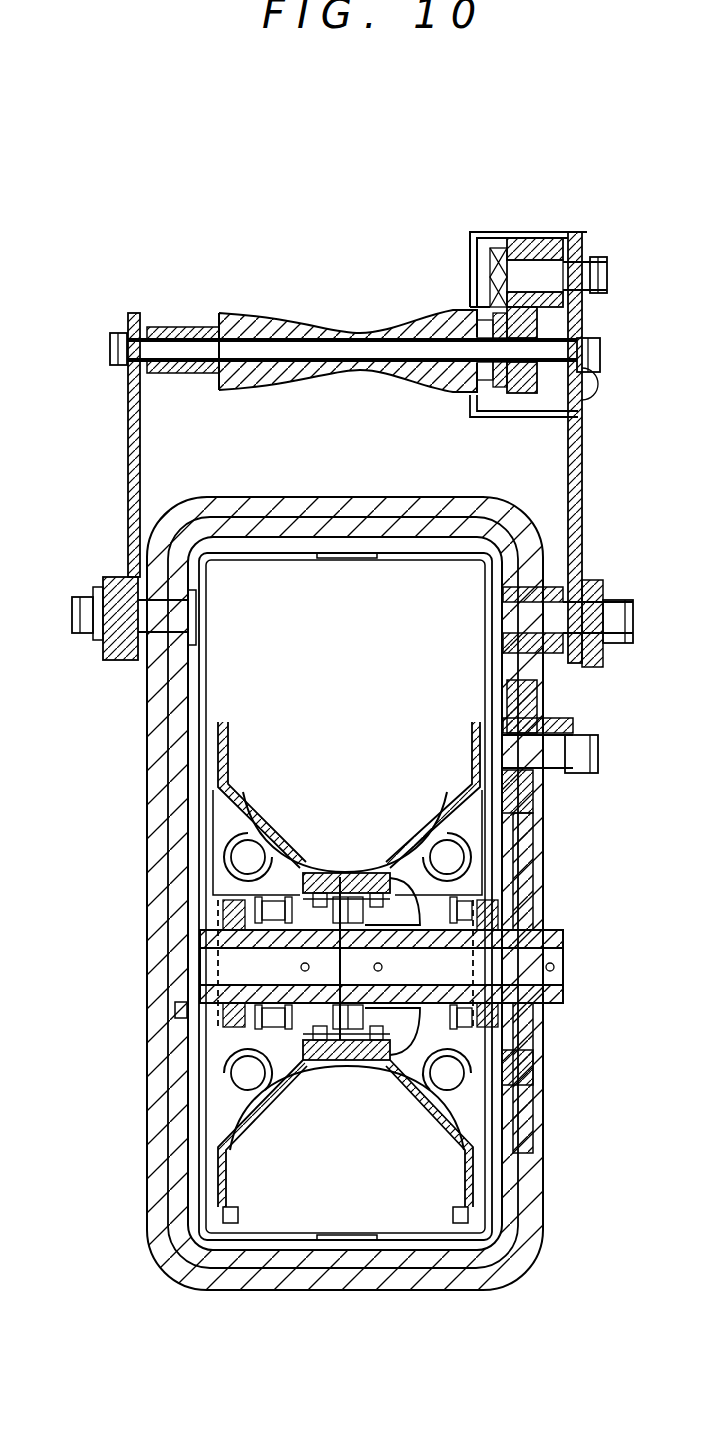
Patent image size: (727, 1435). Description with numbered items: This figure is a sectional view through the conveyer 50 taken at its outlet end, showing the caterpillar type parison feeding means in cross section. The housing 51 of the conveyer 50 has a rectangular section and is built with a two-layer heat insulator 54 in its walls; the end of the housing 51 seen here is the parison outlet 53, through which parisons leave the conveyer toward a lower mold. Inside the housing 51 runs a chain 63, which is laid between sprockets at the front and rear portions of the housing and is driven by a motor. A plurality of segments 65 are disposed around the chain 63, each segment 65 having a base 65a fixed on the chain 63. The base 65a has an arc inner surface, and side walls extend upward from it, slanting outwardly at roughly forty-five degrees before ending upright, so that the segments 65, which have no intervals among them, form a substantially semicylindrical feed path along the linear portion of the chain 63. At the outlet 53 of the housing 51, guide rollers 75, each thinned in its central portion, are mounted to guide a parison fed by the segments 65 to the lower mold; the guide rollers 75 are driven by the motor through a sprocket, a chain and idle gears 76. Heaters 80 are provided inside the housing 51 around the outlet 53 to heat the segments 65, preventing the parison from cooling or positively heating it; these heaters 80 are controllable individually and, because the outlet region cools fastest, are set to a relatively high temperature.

The conveyer 50 is at (78, 818).
The housing 51 is at (137, 847).
The parison outlet 53 is at (407, 577).
The two-layer heat insulator 54 is at (145, 942).
The chain 63 is at (400, 875).
The segments 65 is at (244, 798).
The base 65a is at (337, 876).
The guide rollers 75 is at (260, 317).
The idle gears 76 is at (547, 242).
The heaters 80 is at (250, 853).